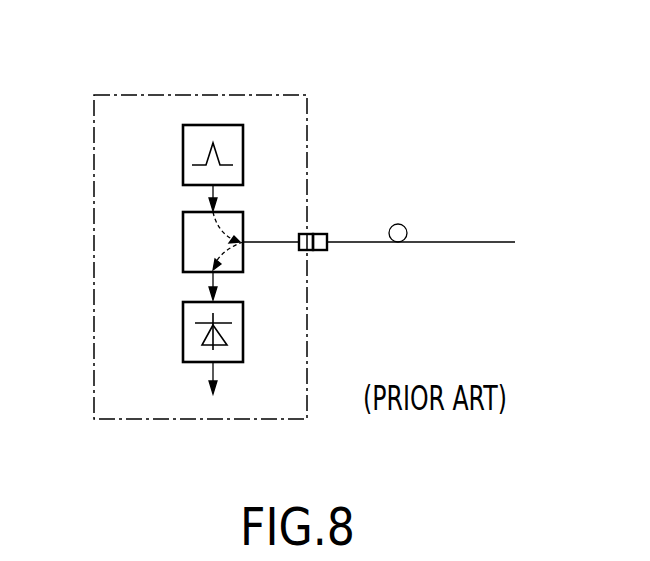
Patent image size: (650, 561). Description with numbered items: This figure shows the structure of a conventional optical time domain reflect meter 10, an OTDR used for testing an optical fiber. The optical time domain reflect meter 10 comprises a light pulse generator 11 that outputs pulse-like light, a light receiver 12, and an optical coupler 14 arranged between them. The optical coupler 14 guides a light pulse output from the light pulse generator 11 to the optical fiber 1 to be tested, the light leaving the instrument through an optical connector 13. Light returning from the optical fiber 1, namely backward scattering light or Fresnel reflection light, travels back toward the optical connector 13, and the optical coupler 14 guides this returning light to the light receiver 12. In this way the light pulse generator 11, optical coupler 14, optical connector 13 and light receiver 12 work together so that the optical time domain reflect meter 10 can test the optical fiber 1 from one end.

The optical time domain reflect meter (OTDR) 10 is at (128, 94).
The light pulse generator 11 is at (183, 153).
The light receiver 12 is at (183, 326).
The optical connector 13 is at (308, 234).
The optical coupler 14 is at (183, 238).
The optical fiber 1 is at (444, 242).